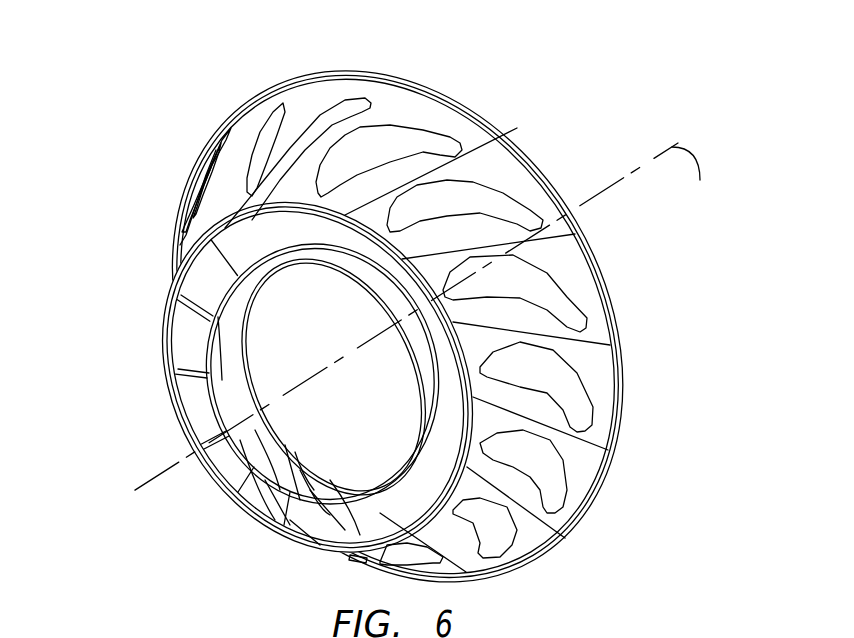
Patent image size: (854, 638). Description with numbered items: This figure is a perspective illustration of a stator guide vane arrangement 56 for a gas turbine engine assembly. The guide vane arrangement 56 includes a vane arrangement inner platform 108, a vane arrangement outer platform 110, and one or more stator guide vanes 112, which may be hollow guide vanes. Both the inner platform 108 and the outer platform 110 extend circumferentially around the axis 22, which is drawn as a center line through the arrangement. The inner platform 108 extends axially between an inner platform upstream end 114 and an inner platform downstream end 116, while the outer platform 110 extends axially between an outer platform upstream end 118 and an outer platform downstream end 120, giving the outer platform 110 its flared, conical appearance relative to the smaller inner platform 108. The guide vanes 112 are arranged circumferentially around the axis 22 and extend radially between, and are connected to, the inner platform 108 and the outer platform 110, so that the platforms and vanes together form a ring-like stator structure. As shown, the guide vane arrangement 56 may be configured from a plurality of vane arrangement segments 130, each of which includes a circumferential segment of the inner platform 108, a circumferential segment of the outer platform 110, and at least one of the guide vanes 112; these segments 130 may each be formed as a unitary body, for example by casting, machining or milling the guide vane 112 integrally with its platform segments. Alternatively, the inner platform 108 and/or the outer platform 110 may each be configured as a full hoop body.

The guide vane arrangement 56 is at (128, 125).
The axis 22 is at (700, 182).
The vane arrangement inner platform 108 is at (388, 292).
The vane arrangement outer platform 110 is at (503, 160).
The stator guide vanes 112 is at (203, 277).
The inner platform upstream end 114 is at (272, 522).
The inner platform downstream end 116 is at (310, 462).
The outer platform upstream end 118 is at (426, 348).
The outer platform downstream end 120 is at (618, 320).
The vane arrangement segments 130 is at (330, 93).